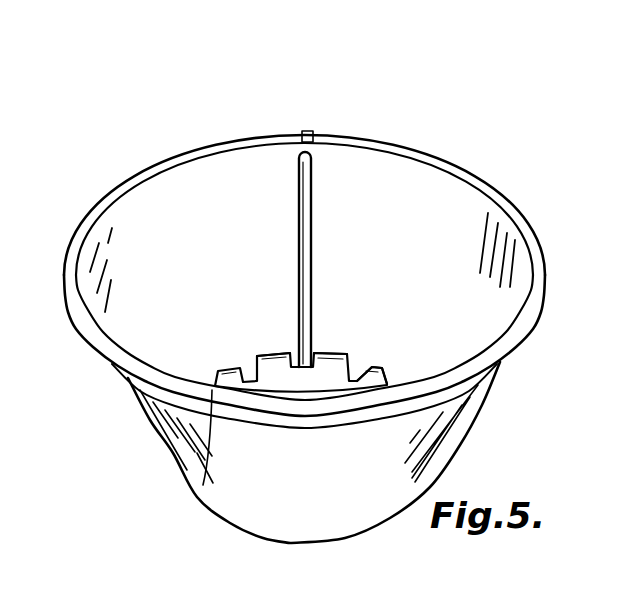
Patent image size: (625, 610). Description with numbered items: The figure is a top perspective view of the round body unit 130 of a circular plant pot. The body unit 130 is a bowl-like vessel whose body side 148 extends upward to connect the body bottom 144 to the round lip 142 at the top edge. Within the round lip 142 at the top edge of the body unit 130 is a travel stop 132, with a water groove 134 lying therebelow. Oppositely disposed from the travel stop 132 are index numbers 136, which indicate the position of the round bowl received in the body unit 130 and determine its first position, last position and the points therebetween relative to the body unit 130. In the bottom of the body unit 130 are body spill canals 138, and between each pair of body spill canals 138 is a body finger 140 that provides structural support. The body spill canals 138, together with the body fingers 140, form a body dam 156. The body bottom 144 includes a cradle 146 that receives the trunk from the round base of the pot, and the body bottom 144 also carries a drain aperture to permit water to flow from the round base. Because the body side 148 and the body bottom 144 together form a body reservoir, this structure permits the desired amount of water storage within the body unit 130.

The body unit 130 is at (220, 113).
The travel stop 132 is at (320, 134).
The water groove 134 is at (310, 194).
The index numbers 136 is at (253, 402).
The body spill canals 138 is at (360, 378).
The body finger 140 is at (331, 352).
The round lip 142 is at (462, 178).
The body bottom 144 is at (333, 388).
The cradle 146 is at (302, 392).
The body side 148 is at (153, 237).
The body dam 156 is at (282, 375).